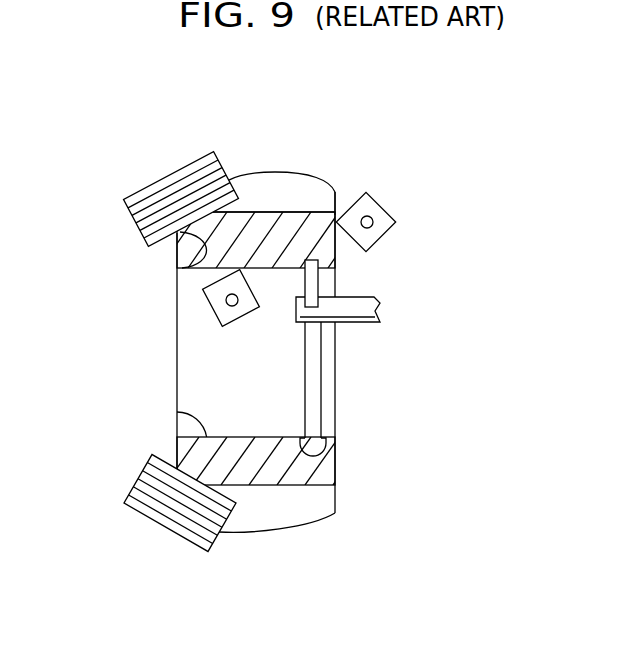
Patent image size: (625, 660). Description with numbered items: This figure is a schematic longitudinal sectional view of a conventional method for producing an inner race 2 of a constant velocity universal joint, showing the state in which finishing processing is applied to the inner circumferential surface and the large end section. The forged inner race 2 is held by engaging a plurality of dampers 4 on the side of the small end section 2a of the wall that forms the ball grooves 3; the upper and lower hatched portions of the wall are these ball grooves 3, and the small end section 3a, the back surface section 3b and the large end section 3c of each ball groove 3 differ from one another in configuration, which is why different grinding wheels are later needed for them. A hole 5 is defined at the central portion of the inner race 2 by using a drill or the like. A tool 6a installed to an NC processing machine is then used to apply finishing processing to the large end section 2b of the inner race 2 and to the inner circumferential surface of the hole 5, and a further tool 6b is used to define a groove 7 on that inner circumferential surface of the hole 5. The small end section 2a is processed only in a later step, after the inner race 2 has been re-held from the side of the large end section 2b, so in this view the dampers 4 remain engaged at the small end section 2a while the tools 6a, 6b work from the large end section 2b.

The inner race 2 is at (311, 179).
The small end section 2a is at (177, 313).
The large end section 2b is at (338, 348).
The ball groove 3 is at (247, 206).
The small end section of the ball groove 3a is at (177, 268).
The back surface section 3b is at (267, 212).
The large end section of the ball groove 3c is at (335, 193).
The damper 4 is at (178, 192).
The hole 5 is at (177, 413).
The tool 6a is at (383, 230).
The tool 6b is at (312, 290).
The groove 7 is at (322, 452).